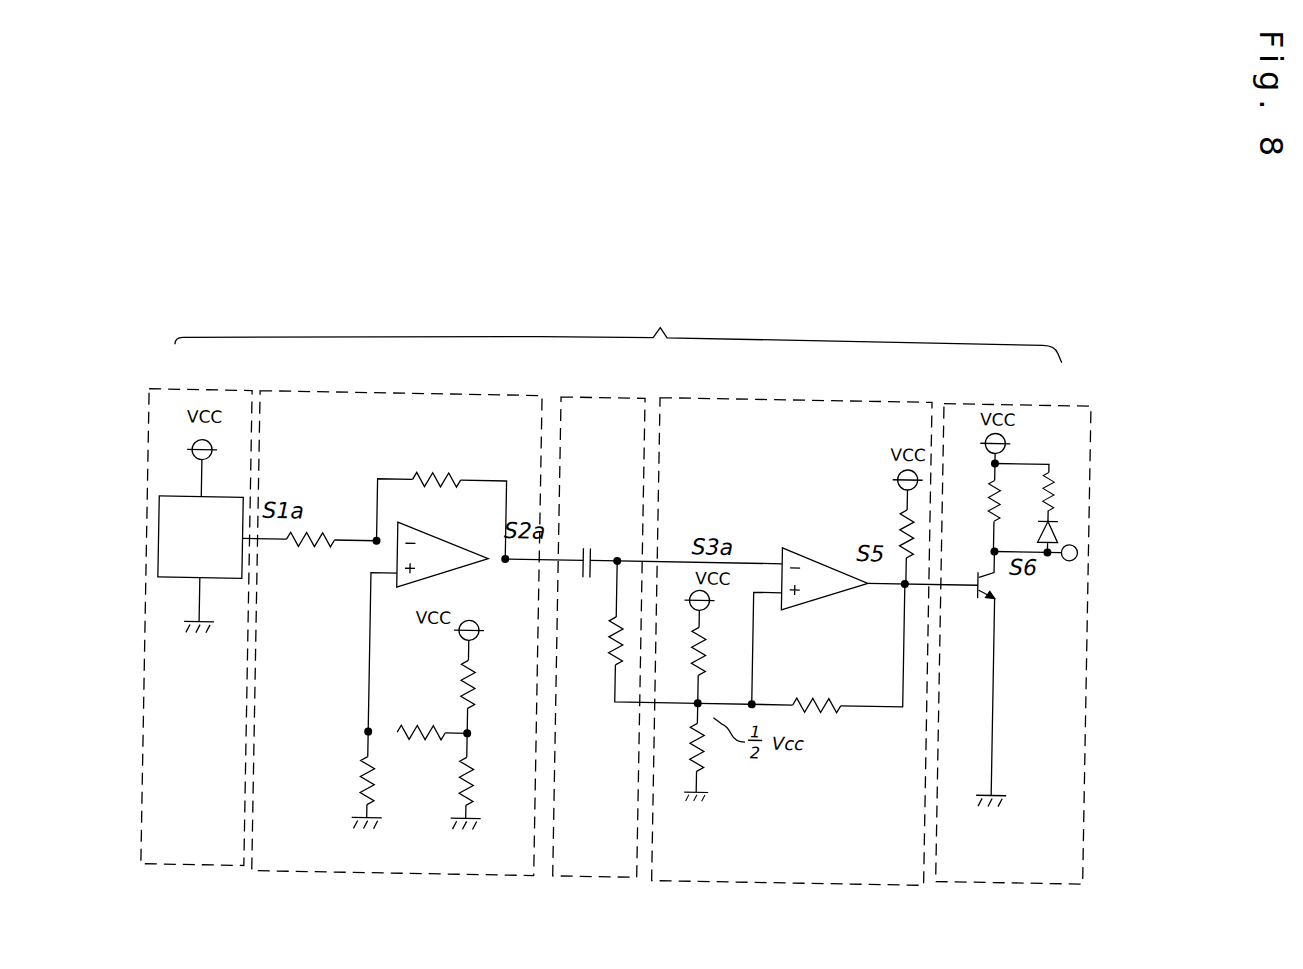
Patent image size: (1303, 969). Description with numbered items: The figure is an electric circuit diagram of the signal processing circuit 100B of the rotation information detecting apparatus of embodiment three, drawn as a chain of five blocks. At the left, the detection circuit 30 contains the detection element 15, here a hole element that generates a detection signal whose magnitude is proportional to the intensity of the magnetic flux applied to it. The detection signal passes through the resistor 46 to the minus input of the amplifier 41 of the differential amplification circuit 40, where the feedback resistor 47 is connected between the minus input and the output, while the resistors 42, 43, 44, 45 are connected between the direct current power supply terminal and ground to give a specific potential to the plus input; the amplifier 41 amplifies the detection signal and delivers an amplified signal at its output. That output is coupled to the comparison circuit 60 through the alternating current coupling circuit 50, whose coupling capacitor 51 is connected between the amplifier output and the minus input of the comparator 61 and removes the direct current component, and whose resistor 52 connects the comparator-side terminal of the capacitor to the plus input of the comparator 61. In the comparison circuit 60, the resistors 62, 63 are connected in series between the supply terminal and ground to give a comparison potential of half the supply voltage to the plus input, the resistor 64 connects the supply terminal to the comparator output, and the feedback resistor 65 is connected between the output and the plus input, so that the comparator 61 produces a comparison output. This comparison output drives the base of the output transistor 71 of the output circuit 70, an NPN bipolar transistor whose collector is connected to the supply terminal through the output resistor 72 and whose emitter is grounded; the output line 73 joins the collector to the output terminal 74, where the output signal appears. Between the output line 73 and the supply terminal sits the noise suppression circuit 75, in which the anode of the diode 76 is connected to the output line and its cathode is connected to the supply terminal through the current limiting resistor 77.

The signal processing circuit 100B is at (619, 327).
The detection circuit 30 is at (196, 397).
The detection element 15 is at (215, 503).
The differential amplification circuit 40 is at (395, 397).
The amplifier 41 is at (443, 544).
The resistor 42 is at (457, 689).
The resistor 43 is at (461, 790).
The resistor 44 is at (423, 723).
The resistor 45 is at (359, 787).
The resistor 46 is at (310, 556).
The feedback resistor 47 is at (430, 475).
The alternating current coupling circuit 50 is at (595, 398).
The coupling capacitor 51 is at (581, 547).
The resistor 52 is at (609, 648).
The comparison circuit 60 is at (785, 397).
The comparator 61 is at (812, 544).
The resistor 62 is at (709, 656).
The resistor 63 is at (709, 764).
The resistor 64 is at (895, 522).
The feedback resistor 65 is at (827, 716).
The output circuit 70 is at (980, 398).
The output transistor 71 is at (996, 582).
The output resistor 72 is at (985, 494).
The output line 73 is at (1052, 548).
The output terminal 74 is at (1079, 545).
The noise suppression circuit 75 is at (1025, 456).
The diode 76 is at (1056, 523).
The current limiting resistor 77 is at (1055, 483).